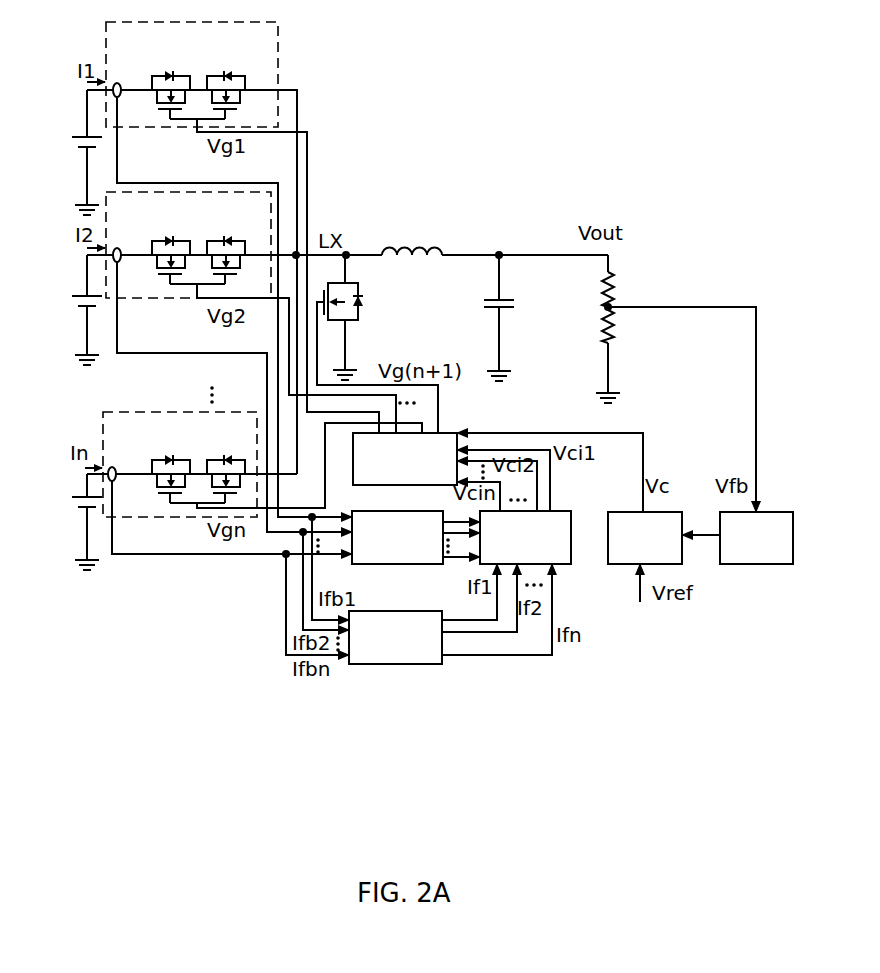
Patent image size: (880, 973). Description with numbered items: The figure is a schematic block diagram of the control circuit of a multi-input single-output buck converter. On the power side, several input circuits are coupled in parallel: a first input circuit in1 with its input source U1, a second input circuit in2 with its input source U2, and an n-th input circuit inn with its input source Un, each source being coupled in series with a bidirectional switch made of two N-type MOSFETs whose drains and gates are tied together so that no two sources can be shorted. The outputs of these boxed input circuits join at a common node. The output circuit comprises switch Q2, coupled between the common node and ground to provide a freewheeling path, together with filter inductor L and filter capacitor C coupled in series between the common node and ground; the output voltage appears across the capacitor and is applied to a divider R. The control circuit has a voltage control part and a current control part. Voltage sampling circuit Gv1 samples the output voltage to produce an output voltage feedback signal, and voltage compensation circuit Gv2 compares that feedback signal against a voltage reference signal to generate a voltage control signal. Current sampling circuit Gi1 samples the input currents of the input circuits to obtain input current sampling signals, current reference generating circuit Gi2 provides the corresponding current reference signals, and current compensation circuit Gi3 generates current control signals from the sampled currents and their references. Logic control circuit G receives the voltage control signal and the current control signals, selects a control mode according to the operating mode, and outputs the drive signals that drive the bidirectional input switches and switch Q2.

The first input circuit in1 is at (192, 74).
The second input circuit in2 is at (188, 245).
The n-th input circuit inn is at (180, 464).
The input source U1 is at (67, 143).
The input source U2 is at (65, 300).
The input source Un is at (64, 501).
The switch Q2 is at (363, 312).
The filter inductor L is at (412, 238).
The filter capacitor C is at (509, 313).
The feedback voltage divider R is at (608, 307).
The logic control circuit G is at (405, 459).
The current sampling circuit Gi1 is at (397, 537).
The current reference generating circuit Gi2 is at (395, 637).
The current compensation circuit Gi3 is at (525, 537).
The voltage sampling circuit Gv1 is at (756, 538).
The voltage compensation circuit Gv2 is at (645, 538).